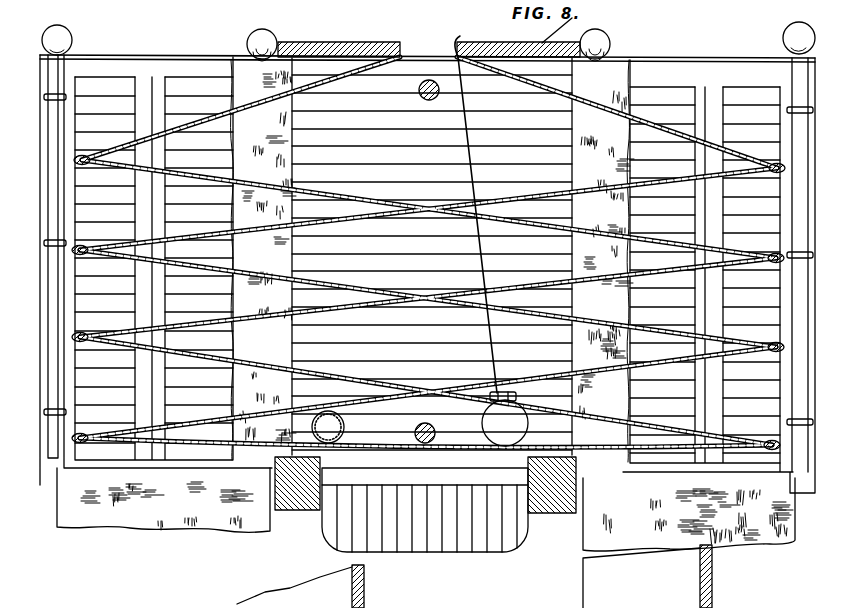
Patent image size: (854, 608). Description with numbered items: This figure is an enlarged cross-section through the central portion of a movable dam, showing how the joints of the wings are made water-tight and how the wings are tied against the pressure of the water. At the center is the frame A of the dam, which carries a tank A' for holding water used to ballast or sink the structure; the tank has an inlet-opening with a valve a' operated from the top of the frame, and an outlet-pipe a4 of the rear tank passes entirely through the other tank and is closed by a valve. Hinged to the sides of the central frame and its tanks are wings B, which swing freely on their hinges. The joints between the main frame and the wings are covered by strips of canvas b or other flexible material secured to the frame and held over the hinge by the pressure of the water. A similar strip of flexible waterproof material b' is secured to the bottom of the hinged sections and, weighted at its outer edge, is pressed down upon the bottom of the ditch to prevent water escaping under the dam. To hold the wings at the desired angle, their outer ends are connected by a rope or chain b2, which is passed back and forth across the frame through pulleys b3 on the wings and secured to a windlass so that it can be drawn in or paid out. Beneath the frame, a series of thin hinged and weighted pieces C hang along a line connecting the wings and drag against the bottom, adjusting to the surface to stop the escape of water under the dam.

The tank A' is at (432, 256).
The wing B is at (427, 260).
The strip of canvas b is at (432, 261).
The strip of flexible waterproof material b' is at (426, 509).
The rope or chain b2 is at (428, 241).
The pulley b3 is at (90, 149).
The frame A is at (450, 277).
The outlet-pipe a4 is at (328, 427).
The valve a' is at (505, 419).
The hinged piece C is at (425, 510).